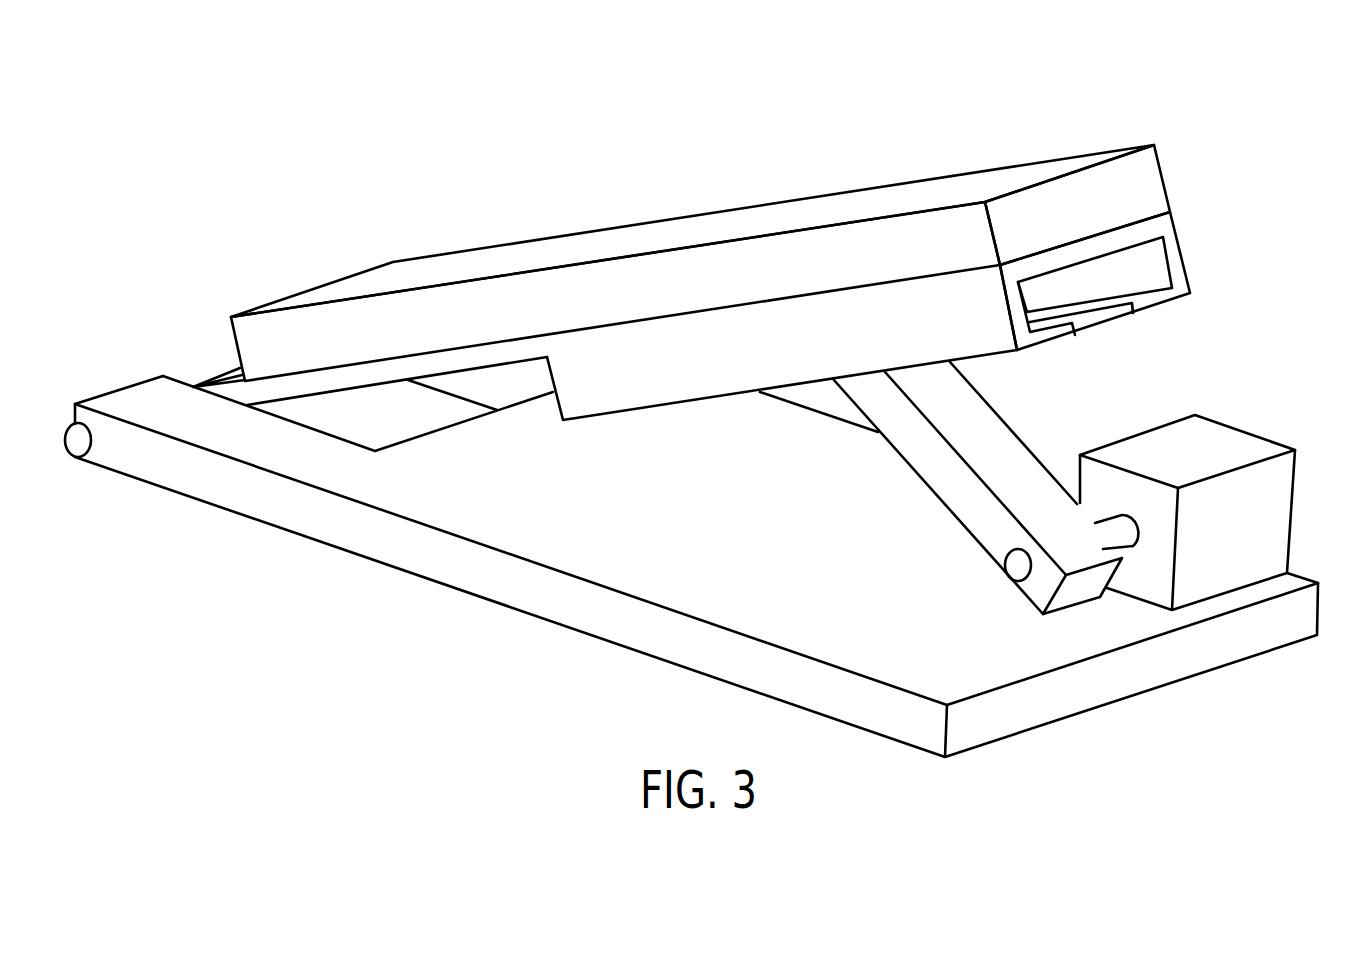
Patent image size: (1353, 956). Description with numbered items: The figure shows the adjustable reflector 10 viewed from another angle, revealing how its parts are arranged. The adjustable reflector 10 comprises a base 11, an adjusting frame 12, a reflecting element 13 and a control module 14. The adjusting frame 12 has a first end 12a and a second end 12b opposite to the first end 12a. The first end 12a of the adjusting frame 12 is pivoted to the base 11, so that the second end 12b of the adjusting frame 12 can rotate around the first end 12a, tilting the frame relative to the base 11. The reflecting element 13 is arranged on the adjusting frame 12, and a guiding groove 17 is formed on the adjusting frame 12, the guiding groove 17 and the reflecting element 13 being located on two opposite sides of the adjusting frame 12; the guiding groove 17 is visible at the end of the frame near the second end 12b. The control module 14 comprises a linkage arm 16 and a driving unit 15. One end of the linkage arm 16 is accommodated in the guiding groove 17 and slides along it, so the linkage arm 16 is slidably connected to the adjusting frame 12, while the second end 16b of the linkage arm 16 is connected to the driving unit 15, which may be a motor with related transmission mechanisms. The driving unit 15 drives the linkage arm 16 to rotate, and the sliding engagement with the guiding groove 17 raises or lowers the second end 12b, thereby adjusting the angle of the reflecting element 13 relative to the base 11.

The adjustable reflector 10 is at (341, 125).
The base 11 is at (465, 577).
The adjusting frame 12 is at (768, 331).
The first end 12a is at (200, 358).
The second end 12b is at (1145, 279).
The reflecting element 13 is at (741, 255).
The control module 14 is at (1088, 465).
The driving unit 15 is at (1280, 507).
The linkage arm 16 is at (985, 488).
The second end 16b is at (985, 582).
The guiding groove 17 is at (1165, 275).